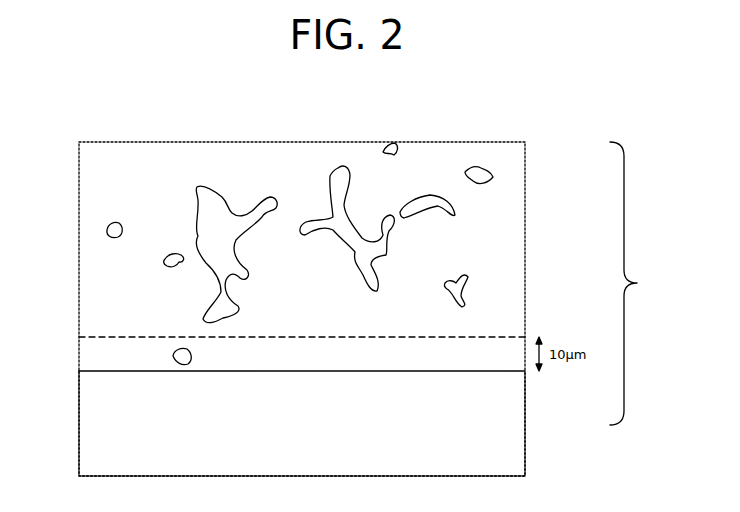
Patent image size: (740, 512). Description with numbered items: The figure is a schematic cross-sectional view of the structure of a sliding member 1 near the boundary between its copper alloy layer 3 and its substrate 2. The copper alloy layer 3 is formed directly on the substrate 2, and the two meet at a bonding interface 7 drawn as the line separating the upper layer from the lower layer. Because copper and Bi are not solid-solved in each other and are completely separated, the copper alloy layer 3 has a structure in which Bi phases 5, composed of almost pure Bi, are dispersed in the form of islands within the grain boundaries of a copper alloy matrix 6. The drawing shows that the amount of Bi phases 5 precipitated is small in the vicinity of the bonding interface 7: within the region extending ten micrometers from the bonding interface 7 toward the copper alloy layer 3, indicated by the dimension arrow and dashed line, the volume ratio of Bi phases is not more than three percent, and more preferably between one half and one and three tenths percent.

The sliding member 1 is at (491, 115).
The substrate 2 is at (510, 424).
The copper alloy layer 3 is at (635, 283).
The Bi phases 5 is at (493, 177).
The copper alloy matrix 6 is at (510, 257).
The bonding interface 7 is at (97, 371).